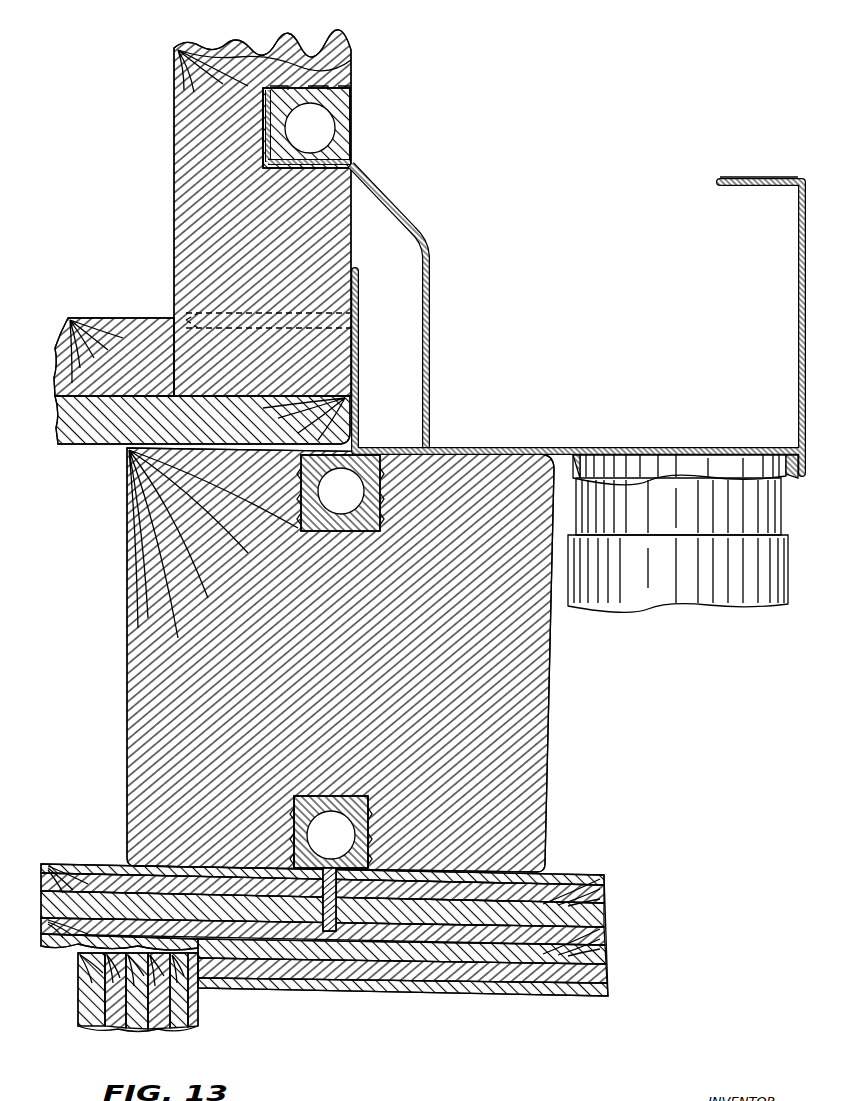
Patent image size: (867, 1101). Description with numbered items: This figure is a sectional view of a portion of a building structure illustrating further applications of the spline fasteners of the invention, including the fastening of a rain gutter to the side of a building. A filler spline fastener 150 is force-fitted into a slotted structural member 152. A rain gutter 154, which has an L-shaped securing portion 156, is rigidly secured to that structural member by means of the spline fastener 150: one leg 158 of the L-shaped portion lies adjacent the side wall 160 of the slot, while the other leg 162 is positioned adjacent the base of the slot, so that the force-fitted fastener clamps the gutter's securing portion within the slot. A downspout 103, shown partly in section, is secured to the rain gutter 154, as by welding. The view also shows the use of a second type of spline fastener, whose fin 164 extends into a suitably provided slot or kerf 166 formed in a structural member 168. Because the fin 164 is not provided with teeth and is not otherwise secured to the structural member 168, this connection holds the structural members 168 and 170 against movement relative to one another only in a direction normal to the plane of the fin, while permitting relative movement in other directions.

The roller member 103 is at (685, 581).
The filler spline fastener 150 is at (343, 93).
The slotted structural member 152 is at (284, 247).
The rain gutter 154 is at (543, 441).
The L-shaped securing portion 156 is at (343, 160).
The leg 158 is at (304, 161).
The side wall 160 is at (266, 161).
The leg 162 is at (255, 120).
The fin 164 is at (330, 884).
The slot or kerf 166 is at (312, 908).
The structural member 168 is at (563, 883).
The structural member 170 is at (527, 733).